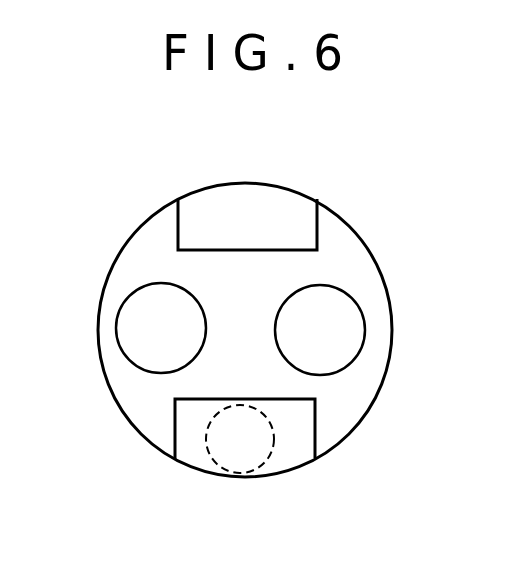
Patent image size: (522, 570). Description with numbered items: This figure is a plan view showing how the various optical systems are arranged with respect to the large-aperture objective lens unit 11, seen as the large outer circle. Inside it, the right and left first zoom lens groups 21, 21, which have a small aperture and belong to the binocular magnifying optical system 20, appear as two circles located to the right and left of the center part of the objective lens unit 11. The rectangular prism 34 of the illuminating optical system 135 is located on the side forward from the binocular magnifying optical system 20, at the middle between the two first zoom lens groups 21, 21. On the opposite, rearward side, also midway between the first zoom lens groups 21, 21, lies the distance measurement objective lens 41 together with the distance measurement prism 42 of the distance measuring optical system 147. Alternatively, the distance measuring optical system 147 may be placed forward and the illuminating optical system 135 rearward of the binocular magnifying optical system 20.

The objective lens unit 11 is at (148, 243).
The illuminating optical system 135 is at (223, 176).
The rectangular prism 34 is at (280, 215).
The first zoom lens group 21 is at (137, 312).
The binocular magnifying optical system 20 is at (112, 349).
The distance measuring optical system 147 is at (165, 482).
The distance measurement prism 42 is at (300, 452).
The distance measurement objective lens 41 is at (266, 466).